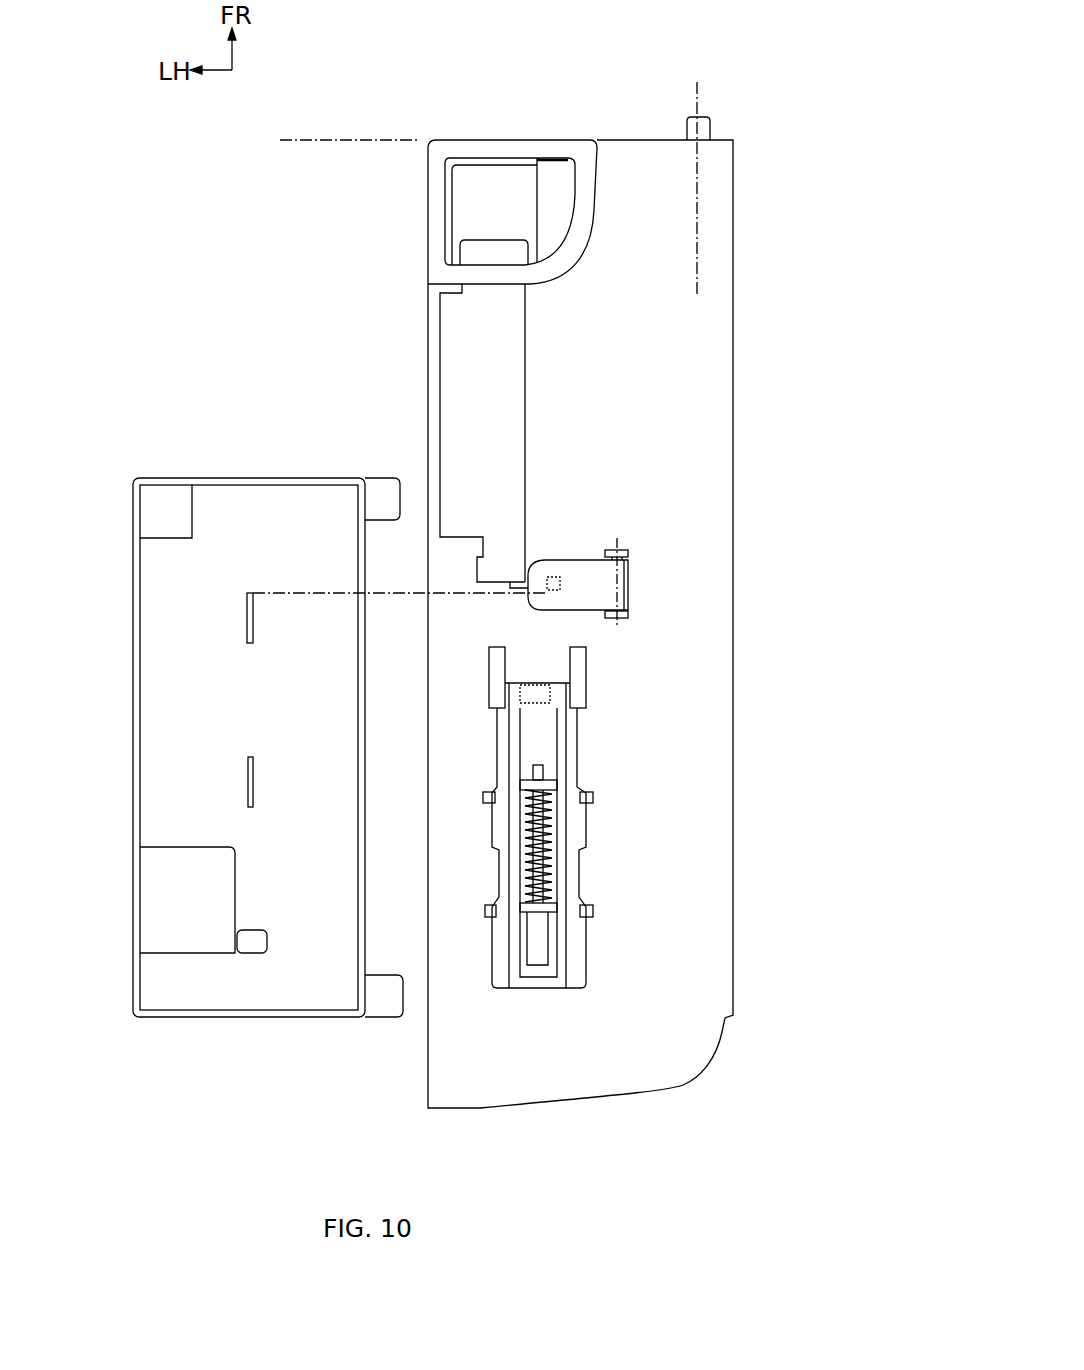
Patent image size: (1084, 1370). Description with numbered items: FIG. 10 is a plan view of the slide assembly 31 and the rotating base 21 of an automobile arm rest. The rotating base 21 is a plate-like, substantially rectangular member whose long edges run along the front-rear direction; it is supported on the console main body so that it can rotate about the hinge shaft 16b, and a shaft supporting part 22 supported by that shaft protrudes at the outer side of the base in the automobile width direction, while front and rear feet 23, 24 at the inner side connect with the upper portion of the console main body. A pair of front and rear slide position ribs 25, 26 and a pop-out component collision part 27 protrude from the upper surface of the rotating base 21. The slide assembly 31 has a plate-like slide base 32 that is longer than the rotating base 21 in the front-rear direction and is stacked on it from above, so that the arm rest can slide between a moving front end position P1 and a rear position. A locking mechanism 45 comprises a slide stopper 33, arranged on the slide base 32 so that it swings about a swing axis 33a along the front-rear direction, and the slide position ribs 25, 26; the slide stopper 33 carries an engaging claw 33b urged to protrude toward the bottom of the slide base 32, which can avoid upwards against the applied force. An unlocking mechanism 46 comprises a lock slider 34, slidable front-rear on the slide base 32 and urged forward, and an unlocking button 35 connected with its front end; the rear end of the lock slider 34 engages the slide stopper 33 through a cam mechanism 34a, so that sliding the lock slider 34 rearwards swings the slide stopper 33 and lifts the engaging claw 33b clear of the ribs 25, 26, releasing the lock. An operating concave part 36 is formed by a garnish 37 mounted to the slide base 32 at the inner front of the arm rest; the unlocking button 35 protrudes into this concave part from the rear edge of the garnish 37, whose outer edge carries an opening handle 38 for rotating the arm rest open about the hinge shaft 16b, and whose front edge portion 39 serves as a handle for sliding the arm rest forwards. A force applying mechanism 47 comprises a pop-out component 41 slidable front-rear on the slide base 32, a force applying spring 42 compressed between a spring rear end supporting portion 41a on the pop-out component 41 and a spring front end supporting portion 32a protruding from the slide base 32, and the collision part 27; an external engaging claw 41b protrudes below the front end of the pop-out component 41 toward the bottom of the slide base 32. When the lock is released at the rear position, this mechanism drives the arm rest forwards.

The rotating base 21 is at (135, 478).
The shaft supporting part 22 is at (380, 490).
The front foot 23 is at (155, 513).
The rear foot 24 is at (157, 905).
The front slide position rib 25 is at (247, 622).
The rear slide position rib 26 is at (248, 782).
The pop-out component collision part 27 is at (252, 952).
The slide assembly 31 is at (720, 140).
The slide base 32 is at (713, 190).
The spring front end supporting portion 32a is at (550, 785).
The slide stopper 33 is at (580, 565).
The swing axis 33a is at (620, 545).
The engaging claw 33b is at (547, 577).
The lock slider 34 is at (510, 410).
The cam mechanism 34a is at (513, 585).
The unlocking button 35 is at (487, 258).
The operating concave part 36 is at (478, 200).
The garnish 37 is at (533, 138).
The opening handle 38 is at (555, 207).
The front edge portion 39 is at (485, 143).
The pop-out component 41 is at (575, 830).
The spring rear end supporting portion 41a is at (538, 910).
The external engaging claw 41b is at (560, 696).
The force applying spring 42 is at (530, 860).
The locking mechanism 45 is at (608, 527).
The unlocking mechanism 46 is at (562, 340).
The force applying mechanism 47 is at (628, 805).
The hinge shaft 16b is at (700, 253).
The moving front end position P1 is at (323, 138).